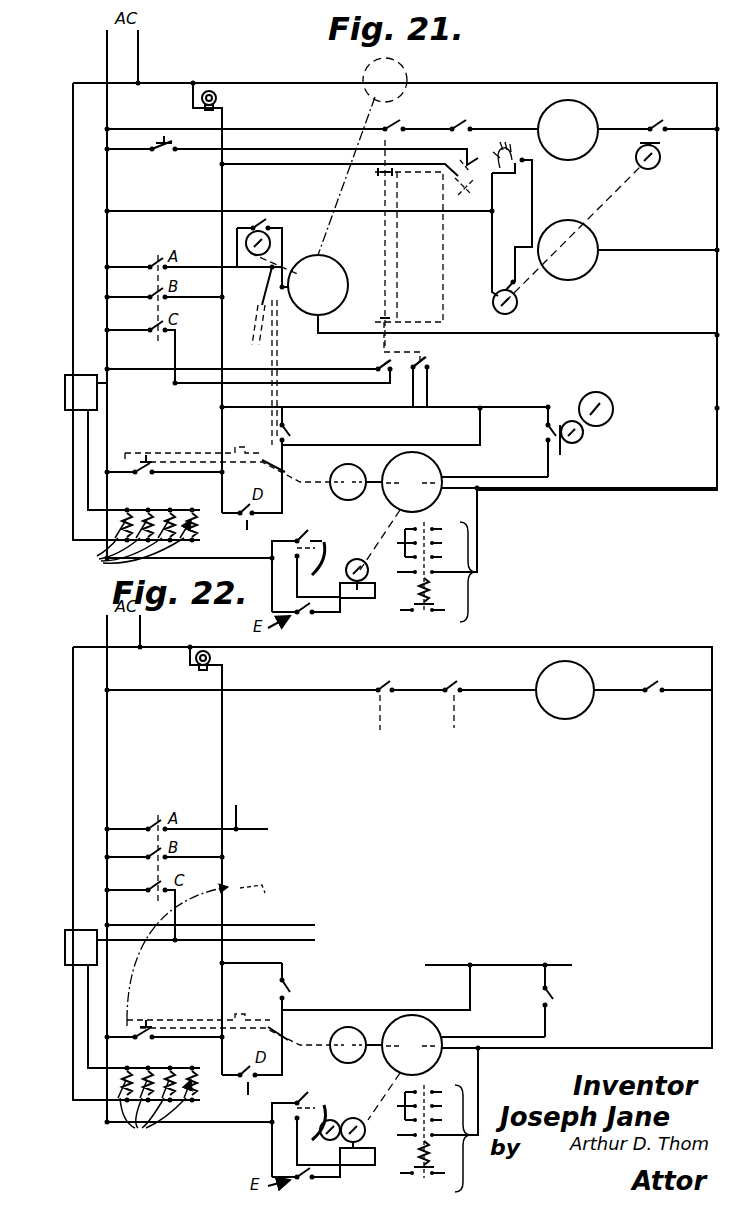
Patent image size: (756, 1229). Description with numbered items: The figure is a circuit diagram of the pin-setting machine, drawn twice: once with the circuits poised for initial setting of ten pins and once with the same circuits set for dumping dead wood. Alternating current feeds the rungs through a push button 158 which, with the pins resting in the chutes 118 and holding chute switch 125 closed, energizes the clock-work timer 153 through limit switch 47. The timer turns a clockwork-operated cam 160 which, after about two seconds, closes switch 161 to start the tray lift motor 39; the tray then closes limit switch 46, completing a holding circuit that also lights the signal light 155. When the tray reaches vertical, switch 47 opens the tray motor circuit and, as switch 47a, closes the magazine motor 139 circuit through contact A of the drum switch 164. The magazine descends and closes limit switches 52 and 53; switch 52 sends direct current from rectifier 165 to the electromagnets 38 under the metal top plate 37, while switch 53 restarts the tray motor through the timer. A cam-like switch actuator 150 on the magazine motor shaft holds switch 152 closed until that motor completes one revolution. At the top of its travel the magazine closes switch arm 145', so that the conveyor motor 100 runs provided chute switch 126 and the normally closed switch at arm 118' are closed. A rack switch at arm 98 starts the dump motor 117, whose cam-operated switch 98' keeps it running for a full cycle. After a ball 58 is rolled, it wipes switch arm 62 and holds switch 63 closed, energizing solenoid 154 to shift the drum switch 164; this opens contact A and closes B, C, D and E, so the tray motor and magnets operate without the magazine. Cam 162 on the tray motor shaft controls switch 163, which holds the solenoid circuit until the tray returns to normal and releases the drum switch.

In FIG. 21, the signal light 155 is at (218, 98).
In FIG. 22, the signal light 155 is at (212, 658).
In FIG. 21, the push button 158 is at (165, 150).
In FIG. 21, the button-actuated switch 152 is at (270, 222).
In FIG. 21, the cam-like switch actuator 150 is at (270, 245).
In FIG. 21, the magazine motor 139 is at (342, 262).
In FIG. 21, the switch 47a is at (258, 287).
In FIG. 21, the switch arm 145' is at (410, 111).
In FIG. 22, the switch arm 145' is at (394, 693).
In FIG. 21, the button-actuated switch 126 is at (462, 124).
In FIG. 22, the button-actuated switch 126 is at (452, 686).
In FIG. 21, the button-actuated switch 125 is at (450, 178).
In FIG. 21, the switch arm 98 is at (512, 202).
In FIG. 21, the conveyor motor 100 is at (578, 102).
In FIG. 22, the conveyor motor 100 is at (586, 676).
In FIG. 21, the switch arm 118' is at (601, 196).
In FIG. 21, the dump motor 117 is at (570, 221).
In FIG. 21, the cam-operated switch 98' is at (481, 298).
In FIG. 21, the rectifier 165 is at (68, 385).
In FIG. 22, the rectifier 165 is at (68, 945).
In FIG. 21, the limit switch 52 is at (376, 367).
In FIG. 21, the limit switch 53 is at (432, 362).
In FIG. 21, the metal top plate 37 is at (172, 453).
In FIG. 22, the metal top plate 37 is at (228, 1029).
In FIG. 21, the limit switch 47 is at (278, 432).
In FIG. 22, the limit switch 47 is at (288, 991).
In FIG. 21, the switch 161 is at (543, 433).
In FIG. 22, the switch 161 is at (540, 992).
In FIG. 21, the clock-work timer 153 is at (612, 420).
In FIG. 21, the clockwork-operated cam 160 is at (576, 443).
In FIG. 21, the limit switch 46 is at (152, 478).
In FIG. 22, the limit switch 46 is at (152, 1043).
In FIG. 21, the tray lift motor 39 is at (440, 470).
In FIG. 22, the tray lift motor 39 is at (440, 1033).
In FIG. 21, the electromagnets 38 is at (134, 537).
In FIG. 22, the electromagnets 38 is at (153, 1111).
In FIG. 21, the switch 63 is at (300, 538).
In FIG. 22, the switch 63 is at (302, 1098).
In FIG. 21, the switch arm 62 is at (330, 548).
In FIG. 22, the switch arm 62 is at (330, 1108).
In FIG. 21, the cam 162 is at (346, 578).
In FIG. 22, the cam 162 is at (365, 1112).
In FIG. 21, the drum switch 164 is at (478, 562).
In FIG. 22, the drum switch 164 is at (470, 1110).
In FIG. 21, the solenoid 154 is at (420, 588).
In FIG. 22, the solenoid 154 is at (420, 1151).
In FIG. 21, the switch 163 is at (355, 595).
In FIG. 22, the switch 163 is at (358, 1165).
In FIG. 22, the chutes 118 is at (666, 675).
In FIG. 22, the ball 58 is at (326, 1140).